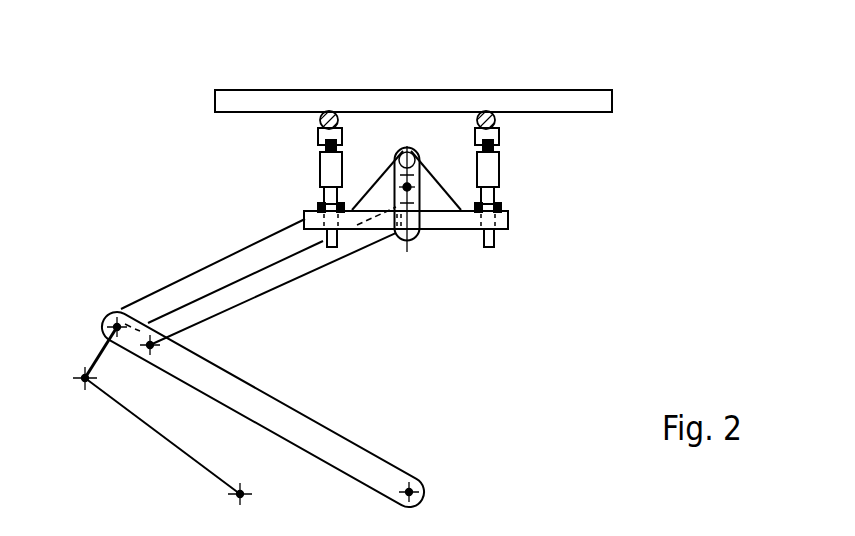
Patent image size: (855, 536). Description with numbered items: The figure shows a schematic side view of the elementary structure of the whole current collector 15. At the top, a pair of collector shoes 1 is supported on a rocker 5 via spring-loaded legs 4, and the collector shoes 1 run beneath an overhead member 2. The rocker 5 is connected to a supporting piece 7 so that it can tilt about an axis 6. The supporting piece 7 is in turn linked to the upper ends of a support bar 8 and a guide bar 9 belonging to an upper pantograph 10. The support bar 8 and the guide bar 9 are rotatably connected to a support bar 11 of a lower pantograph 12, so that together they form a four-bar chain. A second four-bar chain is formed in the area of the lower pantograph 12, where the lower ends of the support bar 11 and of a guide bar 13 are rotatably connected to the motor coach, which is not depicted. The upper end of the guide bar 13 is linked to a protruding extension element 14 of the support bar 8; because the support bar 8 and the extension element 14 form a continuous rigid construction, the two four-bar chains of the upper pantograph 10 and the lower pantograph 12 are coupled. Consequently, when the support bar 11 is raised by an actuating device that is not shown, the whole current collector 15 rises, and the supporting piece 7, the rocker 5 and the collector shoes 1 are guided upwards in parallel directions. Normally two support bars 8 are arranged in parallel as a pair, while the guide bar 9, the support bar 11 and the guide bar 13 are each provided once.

The collector shoes 1 is at (321, 124).
The support beam 2 is at (408, 105).
The spring-loaded legs 4 is at (533, 160).
The rocker 5 is at (419, 168).
The axis 6 is at (411, 150).
The supporting piece 7 is at (418, 218).
The support bar 8 is at (192, 293).
The guide bar 9 is at (300, 286).
The upper pantograph 10 is at (218, 252).
The support bar 11 is at (285, 418).
The lower pantograph 12 is at (117, 431).
The guide bar 13 is at (183, 449).
The extension element 14 is at (107, 343).
The current collector 15 is at (437, 368).